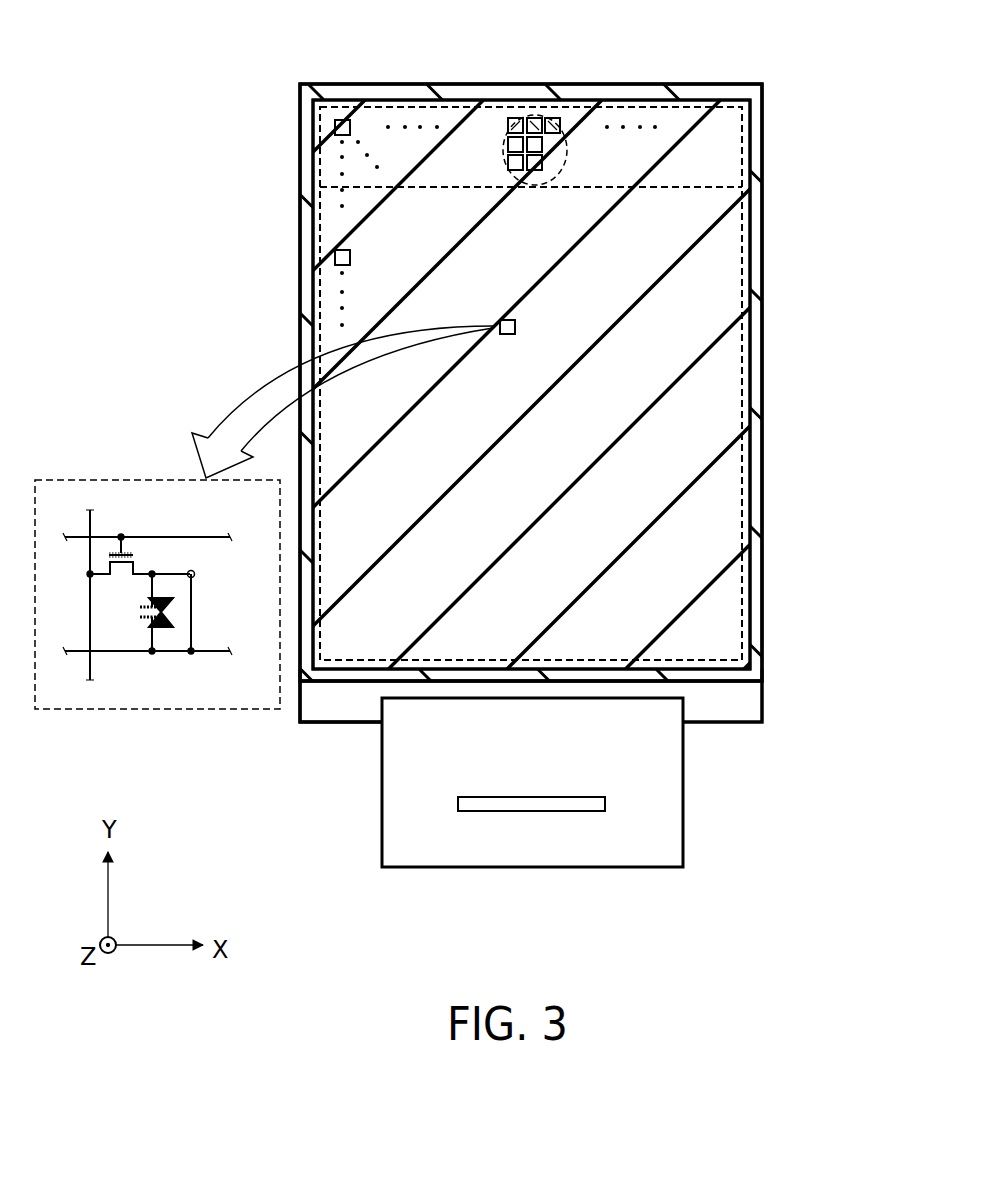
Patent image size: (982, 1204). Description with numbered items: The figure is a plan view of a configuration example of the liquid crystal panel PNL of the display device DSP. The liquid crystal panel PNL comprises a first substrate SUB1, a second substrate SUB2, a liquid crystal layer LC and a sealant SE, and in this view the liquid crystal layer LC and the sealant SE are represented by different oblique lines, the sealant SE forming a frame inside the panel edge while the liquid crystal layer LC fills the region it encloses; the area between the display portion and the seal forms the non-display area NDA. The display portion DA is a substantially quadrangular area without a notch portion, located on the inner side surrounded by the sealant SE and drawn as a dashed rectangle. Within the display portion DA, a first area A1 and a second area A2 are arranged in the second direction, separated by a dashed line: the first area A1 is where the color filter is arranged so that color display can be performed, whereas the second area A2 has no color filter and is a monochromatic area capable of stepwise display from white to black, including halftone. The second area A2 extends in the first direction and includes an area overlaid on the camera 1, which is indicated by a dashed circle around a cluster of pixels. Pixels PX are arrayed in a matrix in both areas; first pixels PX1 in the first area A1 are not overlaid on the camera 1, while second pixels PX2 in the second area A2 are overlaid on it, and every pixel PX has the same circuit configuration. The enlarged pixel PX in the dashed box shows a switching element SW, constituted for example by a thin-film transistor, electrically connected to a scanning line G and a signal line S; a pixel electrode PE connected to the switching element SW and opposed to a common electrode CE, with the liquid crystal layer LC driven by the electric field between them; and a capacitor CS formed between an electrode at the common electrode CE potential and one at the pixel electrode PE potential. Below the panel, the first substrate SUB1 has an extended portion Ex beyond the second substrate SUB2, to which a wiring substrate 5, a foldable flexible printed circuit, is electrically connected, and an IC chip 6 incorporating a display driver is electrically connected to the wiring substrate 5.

The display device DSP is at (270, 112).
The liquid crystal panel PNL is at (768, 332).
The first substrate SUB1 is at (755, 707).
The second substrate SUB2 is at (755, 605).
The extended portion Ex is at (316, 712).
The sealant SE is at (755, 453).
The non-display area NDA is at (754, 270).
The liquid crystal layer LC is at (731, 385).
The display portion DA is at (840, 127).
The first area A1 is at (712, 212).
The second area A2 is at (732, 147).
The pixel PX is at (343, 121).
The first pixel PX1 is at (337, 264).
The second pixel PX2 is at (535, 118).
The camera 1 is at (560, 165).
The wiring substrate 5 is at (683, 847).
The IC chip 6 is at (606, 803).
The scanning line G is at (76, 537).
The signal line S is at (89, 601).
The switching element SW is at (149, 565).
The pixel electrode PE is at (196, 574).
The capacitor CS is at (134, 614).
The common electrode CE is at (210, 652).